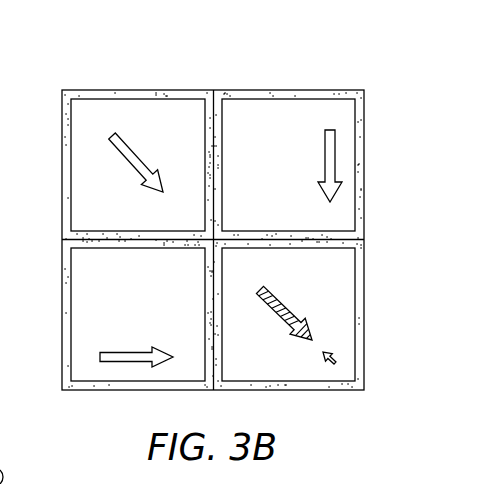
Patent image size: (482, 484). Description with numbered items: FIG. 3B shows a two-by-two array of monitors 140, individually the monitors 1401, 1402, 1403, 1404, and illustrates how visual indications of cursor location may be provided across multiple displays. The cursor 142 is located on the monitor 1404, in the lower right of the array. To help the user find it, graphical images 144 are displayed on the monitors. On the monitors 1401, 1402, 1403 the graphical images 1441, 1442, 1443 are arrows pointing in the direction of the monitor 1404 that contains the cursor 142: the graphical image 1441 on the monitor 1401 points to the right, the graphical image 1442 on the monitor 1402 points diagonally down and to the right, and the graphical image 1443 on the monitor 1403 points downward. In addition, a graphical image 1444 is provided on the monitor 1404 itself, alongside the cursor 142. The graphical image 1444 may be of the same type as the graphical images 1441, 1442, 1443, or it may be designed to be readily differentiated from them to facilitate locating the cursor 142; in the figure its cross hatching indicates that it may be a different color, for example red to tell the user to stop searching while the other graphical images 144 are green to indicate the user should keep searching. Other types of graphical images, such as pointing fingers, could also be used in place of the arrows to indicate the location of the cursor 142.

The monitors 140 is at (230, 70).
The monitor 1401 is at (62, 318).
The monitor 1402 is at (62, 150).
The monitor 1403 is at (364, 178).
The monitor 1404 is at (364, 328).
The graphical images 144 is at (222, 239).
The graphical image 1441 is at (127, 355).
The graphical image 1442 is at (140, 162).
The graphical image 1443 is at (325, 148).
The graphical image 1444 is at (285, 308).
The cursor 142 is at (320, 359).